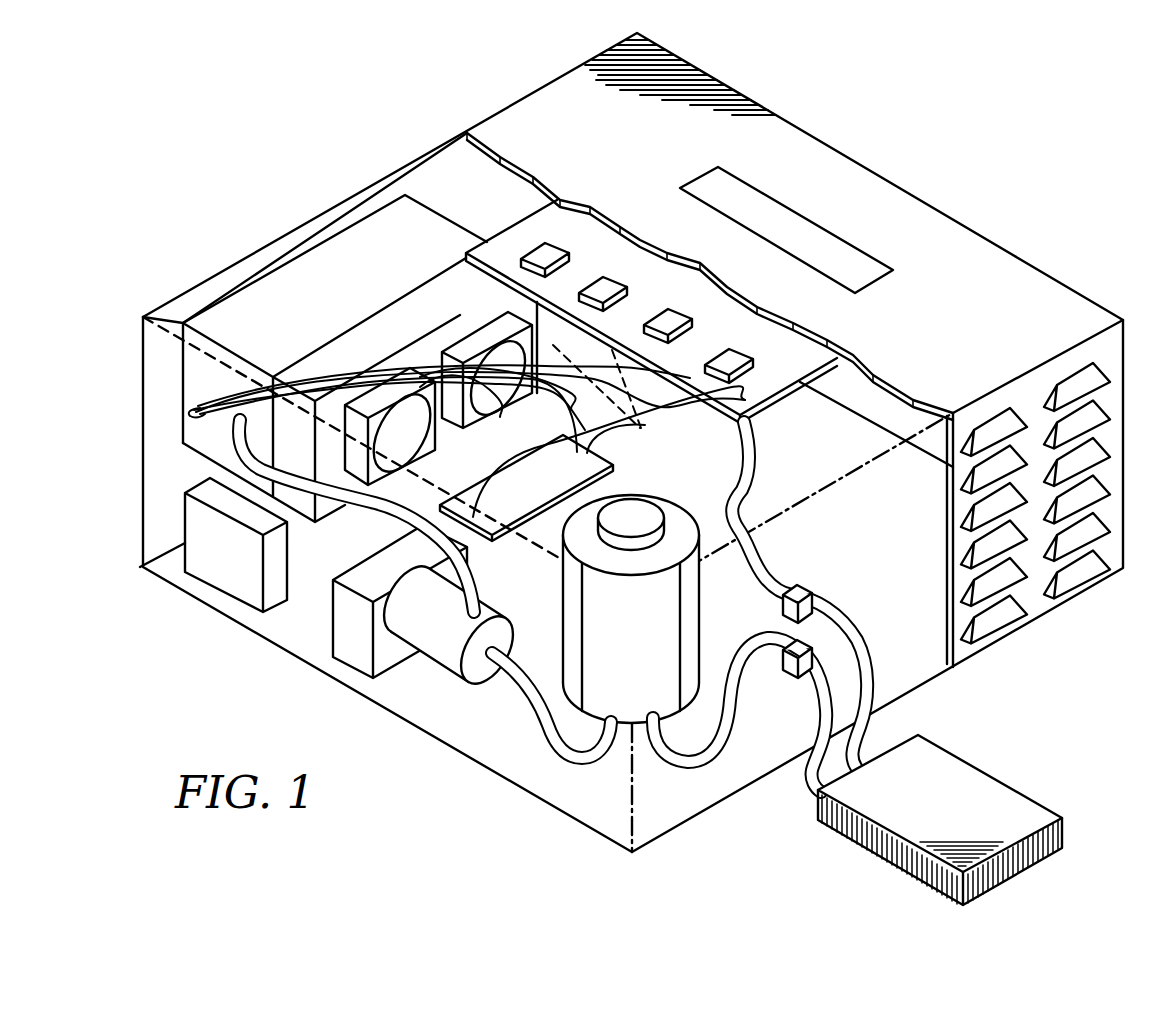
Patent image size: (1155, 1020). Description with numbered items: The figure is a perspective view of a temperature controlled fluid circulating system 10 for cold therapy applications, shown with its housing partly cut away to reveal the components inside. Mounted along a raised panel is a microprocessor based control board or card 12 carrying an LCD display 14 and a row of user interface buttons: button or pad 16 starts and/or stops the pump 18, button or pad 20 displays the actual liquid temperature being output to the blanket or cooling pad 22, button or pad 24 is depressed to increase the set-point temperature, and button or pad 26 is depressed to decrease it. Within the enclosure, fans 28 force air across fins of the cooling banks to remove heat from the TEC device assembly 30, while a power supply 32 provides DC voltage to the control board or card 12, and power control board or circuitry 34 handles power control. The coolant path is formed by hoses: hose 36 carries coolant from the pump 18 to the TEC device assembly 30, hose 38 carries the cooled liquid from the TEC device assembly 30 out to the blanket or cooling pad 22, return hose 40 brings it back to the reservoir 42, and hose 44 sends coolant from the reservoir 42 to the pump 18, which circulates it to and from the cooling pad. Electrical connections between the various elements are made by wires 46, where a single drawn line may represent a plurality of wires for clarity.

The temperature controlled fluid circulating system 10 is at (962, 154).
The control board or card 12 is at (763, 388).
The LCD display 14 is at (787, 216).
The button or pad 16 is at (549, 254).
The pump 18 is at (452, 650).
The button or pad 20 is at (605, 284).
The blanket or cooling pad 22 is at (984, 790).
The button or pad 24 is at (665, 317).
The button or pad 26 is at (727, 357).
The fans 28 is at (478, 342).
The TEC device assembly 30 is at (368, 300).
The power supply 32 is at (215, 590).
The power control board or circuitry 34 is at (525, 506).
The hose 36 is at (382, 515).
The hose 38 is at (774, 570).
The return hose 40 is at (685, 757).
The reservoir 42 is at (568, 603).
The hose 44 is at (520, 697).
The wires 46 is at (482, 424).